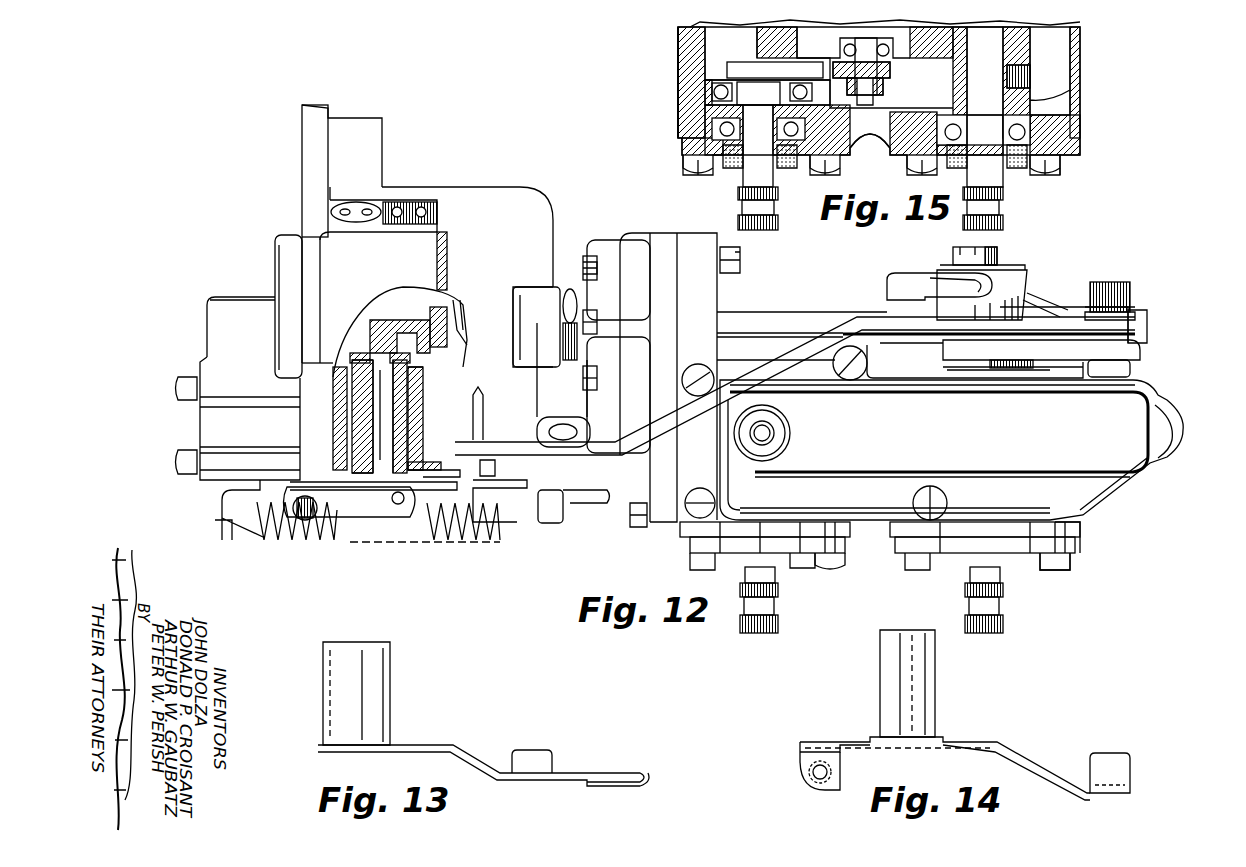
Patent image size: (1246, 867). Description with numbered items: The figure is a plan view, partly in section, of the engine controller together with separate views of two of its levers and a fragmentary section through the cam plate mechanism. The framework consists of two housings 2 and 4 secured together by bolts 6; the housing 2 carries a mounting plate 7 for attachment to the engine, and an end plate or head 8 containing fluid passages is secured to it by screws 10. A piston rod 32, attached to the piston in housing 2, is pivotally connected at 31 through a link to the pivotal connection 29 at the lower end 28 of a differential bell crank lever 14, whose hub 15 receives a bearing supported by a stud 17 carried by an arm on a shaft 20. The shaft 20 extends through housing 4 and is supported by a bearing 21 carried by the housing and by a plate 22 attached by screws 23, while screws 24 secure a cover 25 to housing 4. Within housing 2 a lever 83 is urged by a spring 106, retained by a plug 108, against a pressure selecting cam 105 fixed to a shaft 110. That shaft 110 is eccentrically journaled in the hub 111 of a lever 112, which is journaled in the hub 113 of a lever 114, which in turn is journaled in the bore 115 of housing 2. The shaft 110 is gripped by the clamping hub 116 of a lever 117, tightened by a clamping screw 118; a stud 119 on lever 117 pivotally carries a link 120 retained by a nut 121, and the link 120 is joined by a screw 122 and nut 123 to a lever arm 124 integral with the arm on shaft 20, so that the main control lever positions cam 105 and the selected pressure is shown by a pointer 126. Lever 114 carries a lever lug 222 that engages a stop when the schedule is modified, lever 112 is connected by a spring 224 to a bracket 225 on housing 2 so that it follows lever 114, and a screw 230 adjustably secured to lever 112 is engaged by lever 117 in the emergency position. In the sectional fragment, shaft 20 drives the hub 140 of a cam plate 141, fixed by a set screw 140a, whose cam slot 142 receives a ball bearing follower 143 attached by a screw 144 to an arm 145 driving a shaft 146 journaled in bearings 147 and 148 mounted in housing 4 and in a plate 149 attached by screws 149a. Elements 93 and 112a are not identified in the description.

In FIG. 12, the housing 2 is at (437, 187).
In FIG. 15, the housing 4 is at (676, 40).
In FIG. 12, the housing 4 is at (712, 232).
In FIG. 12, the bolts 6 is at (741, 258).
In FIG. 12, the mounting plate 7 is at (300, 135).
In FIG. 12, the end plate or head 8 is at (236, 295).
In FIG. 12, the screws 10 is at (185, 376).
In FIG. 12, the differential bell crank lever 14 is at (908, 274).
In FIG. 12, the hub 15 is at (1025, 272).
In FIG. 12, the stud 17 is at (985, 246).
In FIG. 15, the shaft 20 is at (1040, 97).
In FIG. 12, the shaft 20 is at (1004, 617).
In FIG. 15, the bearing 21 is at (1070, 125).
In FIG. 15, the plate 22 is at (1068, 152).
In FIG. 12, the plate 22 is at (1076, 548).
In FIG. 12, the screws 23 is at (1072, 568).
In FIG. 12, the screws 24 is at (700, 363).
In FIG. 12, the cover 25 is at (1155, 405).
In FIG. 12, the lower end of lever 14 28 is at (1052, 300).
In FIG. 12, the pivotal connection 29 is at (1120, 283).
In FIG. 12, the pivotal connection 31 is at (925, 360).
In FIG. 12, the piston rod 32 is at (765, 315).
In FIG. 12, the lever 83 is at (445, 310).
In FIG. 12, the screw 93 is at (598, 265).
In FIG. 12, the pressure selecting cam 105 is at (408, 322).
In FIG. 12, the spring 106 is at (457, 305).
In FIG. 12, the plug 108 is at (578, 300).
In FIG. 12, the shaft 110 is at (385, 407).
In FIG. 12, the hub 111 is at (408, 392).
In FIG. 14, the hub 111 is at (936, 675).
In FIG. 12, the lever 112 is at (335, 482).
In FIG. 14, the lever 112 is at (1000, 745).
In FIG. 12, the tab 112a is at (575, 482).
In FIG. 14, the tab 112a is at (1128, 753).
In FIG. 12, the hub 113 is at (418, 422).
In FIG. 13, the hub 113 is at (390, 687).
In FIG. 12, the lever 114 is at (440, 462).
In FIG. 13, the lever 114 is at (442, 746).
In FIG. 12, the bore 115 is at (335, 370).
In FIG. 12, the clamping hub 116 is at (380, 518).
In FIG. 12, the lever 117 is at (420, 530).
In FIG. 12, the clamping screw 118 is at (397, 505).
In FIG. 12, the stud 119 is at (540, 425).
In FIG. 12, the link 120 is at (645, 433).
In FIG. 12, the nut 121 is at (500, 470).
In FIG. 12, the screw 122 is at (1132, 366).
In FIG. 12, the nut 123 is at (1148, 308).
In FIG. 12, the lever arm 124 is at (1045, 345).
In FIG. 12, the pointer 126 is at (480, 393).
In FIG. 15, the hub 140 is at (953, 90).
In FIG. 15, the set screw 140a is at (1032, 76).
In FIG. 15, the cam plate 141 is at (1072, 42).
In FIG. 15, the cam slot 142 is at (893, 50).
In FIG. 15, the ball bearing follower 143 is at (839, 46).
In FIG. 15, the screw 144 is at (868, 108).
In FIG. 15, the arm 145 is at (748, 62).
In FIG. 15, the shaft 146 is at (777, 170).
In FIG. 12, the shaft 146 is at (779, 617).
In FIG. 15, the bearing 147 is at (705, 92).
In FIG. 15, the bearing 148 is at (705, 125).
In FIG. 15, the plate 149 is at (684, 148).
In FIG. 12, the plate 149 is at (690, 548).
In FIG. 15, the screws 149a is at (690, 174).
In FIG. 12, the screws 149a is at (846, 568).
In FIG. 13, the lever lug 222 is at (545, 750).
In FIG. 12, the spring 224 is at (270, 540).
In FIG. 12, the bracket 225 is at (220, 508).
In FIG. 12, the screw 230 is at (305, 520).